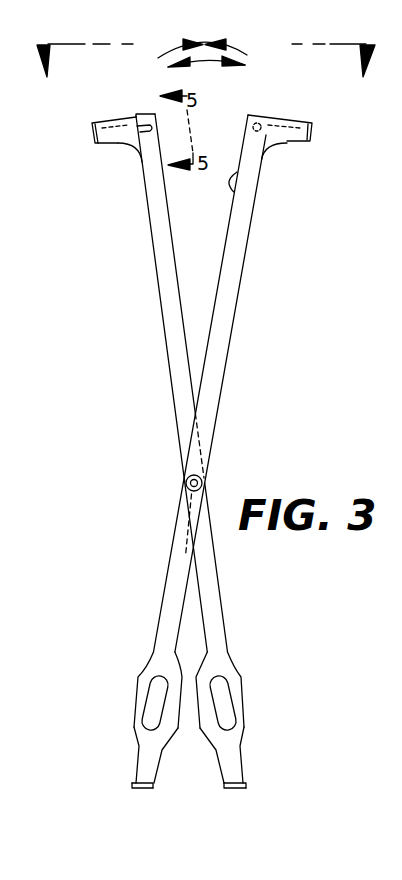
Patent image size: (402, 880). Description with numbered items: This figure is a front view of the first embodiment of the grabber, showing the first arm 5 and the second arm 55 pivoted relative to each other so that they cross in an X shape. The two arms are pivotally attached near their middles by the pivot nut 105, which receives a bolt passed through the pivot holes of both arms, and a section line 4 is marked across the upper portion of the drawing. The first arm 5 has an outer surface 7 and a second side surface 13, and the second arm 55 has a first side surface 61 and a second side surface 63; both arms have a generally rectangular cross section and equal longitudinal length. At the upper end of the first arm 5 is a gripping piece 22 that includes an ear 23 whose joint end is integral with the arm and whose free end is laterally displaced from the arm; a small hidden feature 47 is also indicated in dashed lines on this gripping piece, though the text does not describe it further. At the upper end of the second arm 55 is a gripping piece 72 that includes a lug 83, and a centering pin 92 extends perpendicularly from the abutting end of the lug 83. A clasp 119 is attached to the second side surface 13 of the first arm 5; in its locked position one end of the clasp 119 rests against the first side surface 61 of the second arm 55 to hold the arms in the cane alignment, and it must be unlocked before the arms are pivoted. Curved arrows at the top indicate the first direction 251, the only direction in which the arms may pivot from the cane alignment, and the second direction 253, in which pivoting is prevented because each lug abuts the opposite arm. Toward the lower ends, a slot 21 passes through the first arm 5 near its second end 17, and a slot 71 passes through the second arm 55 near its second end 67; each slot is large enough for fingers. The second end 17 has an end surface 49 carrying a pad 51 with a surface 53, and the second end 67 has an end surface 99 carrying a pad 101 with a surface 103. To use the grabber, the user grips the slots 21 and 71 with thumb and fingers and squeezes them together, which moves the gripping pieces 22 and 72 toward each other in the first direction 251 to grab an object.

The section line 4- 4 is at (205, 58).
The first arm 5 is at (209, 451).
The outer surface 7 is at (227, 358).
The second side surface 13 is at (233, 205).
The second end 17 is at (151, 782).
The slot 21 is at (162, 697).
The gripping piece 22 is at (314, 134).
The ear 23 is at (285, 143).
The detent on second arm head 47 is at (250, 125).
The end surface 49 is at (141, 782).
The pad 51 is at (132, 785).
The surface 53 is at (143, 789).
The second arm 55 is at (168, 451).
The first side surface 61 is at (151, 231).
The second side surface 63 is at (173, 243).
The second end 67 is at (236, 777).
The slot 71 is at (220, 703).
The gripping piece 72 is at (92, 131).
The lug 83 is at (118, 144).
The centering pin 92 is at (147, 115).
The end surface 99 is at (247, 789).
The pad 101 is at (246, 782).
The surface 103 is at (235, 789).
The pivot nut 105 is at (186, 486).
The clasp 119 is at (232, 176).
The first direction 251 is at (200, 65).
The second direction 253 is at (247, 51).